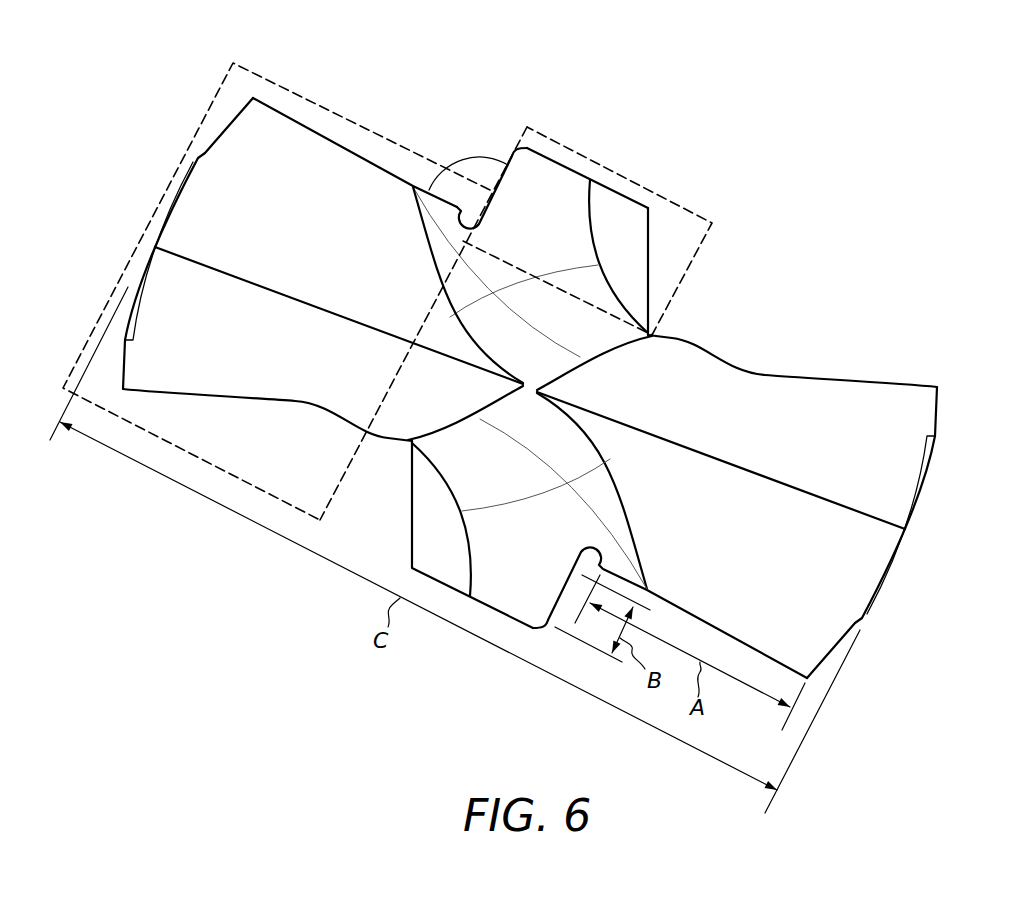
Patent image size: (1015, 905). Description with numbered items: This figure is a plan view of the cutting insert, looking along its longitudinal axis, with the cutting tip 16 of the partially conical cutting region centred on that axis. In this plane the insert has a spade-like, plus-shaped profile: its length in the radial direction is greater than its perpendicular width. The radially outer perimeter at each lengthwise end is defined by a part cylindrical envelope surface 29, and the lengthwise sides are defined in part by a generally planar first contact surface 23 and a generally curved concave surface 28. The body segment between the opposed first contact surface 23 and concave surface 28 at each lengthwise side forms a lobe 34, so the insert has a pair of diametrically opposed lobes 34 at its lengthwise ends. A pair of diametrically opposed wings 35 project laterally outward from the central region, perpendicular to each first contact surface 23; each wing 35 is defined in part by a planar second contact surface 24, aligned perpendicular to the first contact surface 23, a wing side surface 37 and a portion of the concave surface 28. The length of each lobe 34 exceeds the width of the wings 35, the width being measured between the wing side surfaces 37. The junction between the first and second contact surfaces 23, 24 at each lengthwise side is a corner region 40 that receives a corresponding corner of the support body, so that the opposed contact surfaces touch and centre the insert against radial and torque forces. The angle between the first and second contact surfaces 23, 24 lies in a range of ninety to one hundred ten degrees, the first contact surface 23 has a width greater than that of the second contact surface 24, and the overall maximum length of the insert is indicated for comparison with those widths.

The cutting tip 16 is at (540, 387).
The first contact surface 23 is at (336, 140).
The second contact surface 24 is at (508, 158).
The curved concave surface 28 is at (835, 376).
The part cylindrical envelope surface 29 is at (926, 480).
The lobe 34 is at (258, 74).
The wing 35 is at (672, 201).
The wing side surface 37 is at (560, 163).
The corner region 40 is at (440, 247).